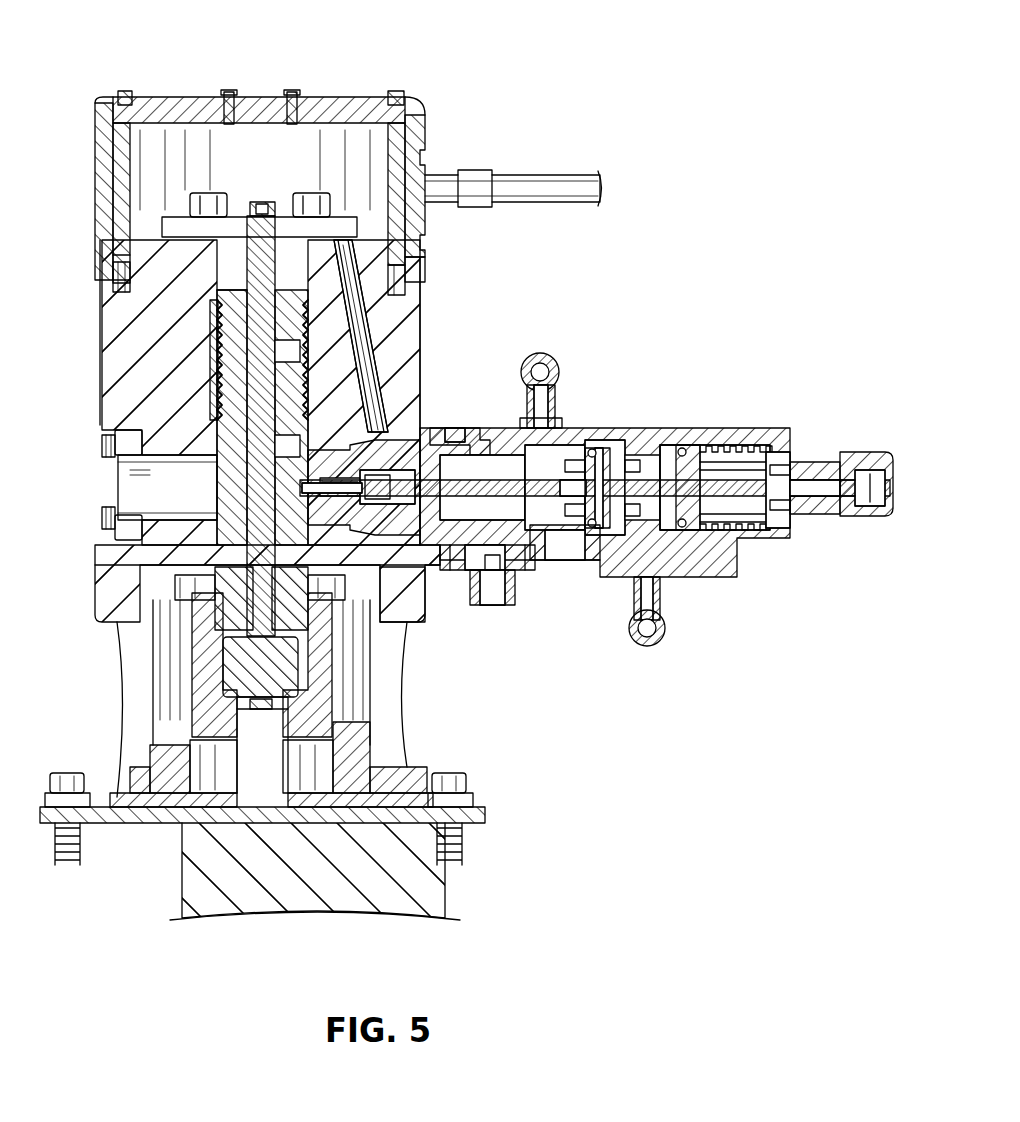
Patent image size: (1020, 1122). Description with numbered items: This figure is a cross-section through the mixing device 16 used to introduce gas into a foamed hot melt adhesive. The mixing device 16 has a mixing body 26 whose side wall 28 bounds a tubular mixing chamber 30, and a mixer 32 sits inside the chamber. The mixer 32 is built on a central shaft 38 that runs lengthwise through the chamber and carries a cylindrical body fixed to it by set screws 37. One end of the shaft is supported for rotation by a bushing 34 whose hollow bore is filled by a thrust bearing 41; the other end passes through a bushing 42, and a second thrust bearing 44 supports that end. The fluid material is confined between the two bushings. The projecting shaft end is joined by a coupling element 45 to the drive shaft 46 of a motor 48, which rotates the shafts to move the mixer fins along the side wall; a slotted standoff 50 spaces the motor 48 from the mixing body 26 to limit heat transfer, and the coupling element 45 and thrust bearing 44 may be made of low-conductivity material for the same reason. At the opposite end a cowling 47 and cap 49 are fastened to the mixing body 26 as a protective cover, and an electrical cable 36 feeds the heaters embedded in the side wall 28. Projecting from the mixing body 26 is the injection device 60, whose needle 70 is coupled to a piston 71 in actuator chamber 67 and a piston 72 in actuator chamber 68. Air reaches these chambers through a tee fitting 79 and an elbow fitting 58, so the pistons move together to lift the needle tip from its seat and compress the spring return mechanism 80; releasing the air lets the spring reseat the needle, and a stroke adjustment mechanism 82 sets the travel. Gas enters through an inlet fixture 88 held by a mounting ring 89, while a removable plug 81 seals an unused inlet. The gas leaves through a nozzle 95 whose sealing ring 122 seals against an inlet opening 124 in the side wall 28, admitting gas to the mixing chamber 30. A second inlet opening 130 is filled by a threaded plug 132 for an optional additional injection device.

The mixing device 16 is at (412, 56).
The mixing body 26 is at (100, 328).
The side wall 28 is at (405, 312).
The tubular mixing chamber 30 is at (403, 302).
The mixer 32 is at (215, 400).
The bushing 34 is at (205, 250).
The electrical cable 36 is at (513, 178).
The set screws 37 is at (330, 372).
The central shaft 38 is at (225, 360).
The thrust bearing 41 is at (268, 260).
The bushing 42 is at (215, 520).
The thrust bearing 44 is at (230, 662).
The coupling element 45 is at (205, 625).
The drive shaft 46 is at (255, 720).
The cowling 47 is at (428, 122).
The motor 48 is at (440, 872).
The cap 49 is at (372, 112).
The standoff 50 is at (407, 678).
The elbow fitting 58 is at (556, 365).
The injection device 60 is at (718, 426).
The actuator chamber 67 is at (665, 448).
The actuator chamber 68 is at (562, 530).
The needle 70 is at (552, 490).
The piston 71 is at (682, 575).
The piston 72 is at (596, 448).
The tee fitting 79 is at (652, 646).
The spring return mechanism 80 is at (737, 520).
The removable plug 81 is at (478, 430).
The stroke adjustment mechanism 82 is at (803, 465).
The inlet fixture 88 is at (510, 598).
The mounting ring 89 is at (535, 570).
The nozzle 95 is at (410, 565).
The sealing ring 122 is at (407, 637).
The inlet opening 124 is at (340, 440).
The inlet opening 130 is at (215, 452).
The plug 132 is at (118, 490).